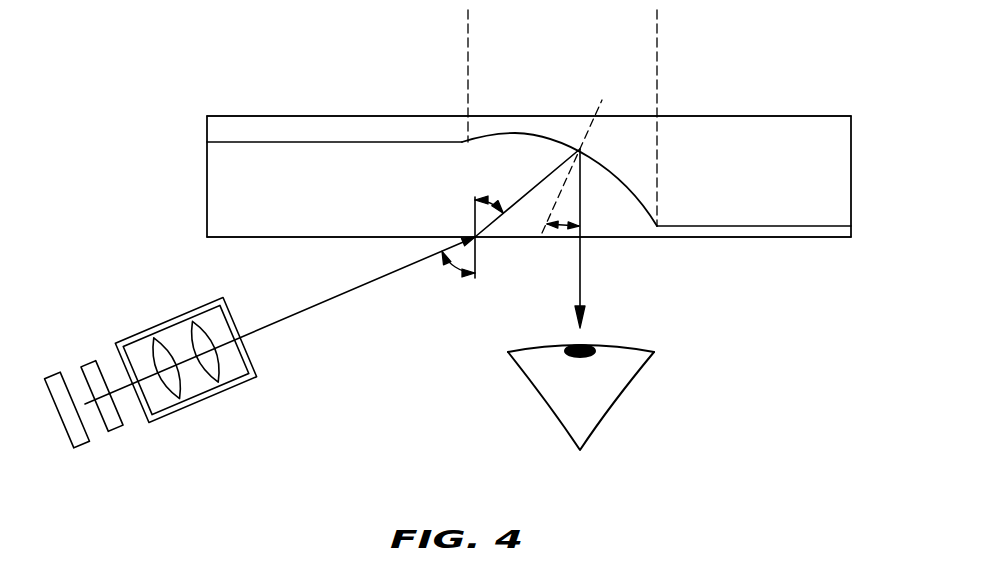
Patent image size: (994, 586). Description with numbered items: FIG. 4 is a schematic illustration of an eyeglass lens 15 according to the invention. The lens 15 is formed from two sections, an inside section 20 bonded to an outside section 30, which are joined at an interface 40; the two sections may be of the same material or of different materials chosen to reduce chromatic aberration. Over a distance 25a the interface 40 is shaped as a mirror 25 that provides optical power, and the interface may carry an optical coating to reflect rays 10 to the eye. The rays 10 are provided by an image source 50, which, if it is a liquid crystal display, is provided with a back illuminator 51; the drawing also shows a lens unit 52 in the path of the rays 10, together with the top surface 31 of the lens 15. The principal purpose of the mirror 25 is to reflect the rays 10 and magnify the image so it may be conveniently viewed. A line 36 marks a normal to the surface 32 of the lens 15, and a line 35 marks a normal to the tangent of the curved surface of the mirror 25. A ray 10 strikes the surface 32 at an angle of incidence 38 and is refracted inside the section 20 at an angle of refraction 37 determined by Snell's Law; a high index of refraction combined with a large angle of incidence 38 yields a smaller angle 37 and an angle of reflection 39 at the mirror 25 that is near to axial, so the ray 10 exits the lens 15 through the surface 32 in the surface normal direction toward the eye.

The rays 10 is at (330, 295).
The eyeglass lens 15 is at (730, 118).
The inside section 20 is at (222, 207).
The mirror 25 is at (516, 135).
The distance 25a is at (657, 28).
The outside section 30 is at (830, 143).
The top surface 31 is at (272, 115).
The surface 32 is at (770, 240).
The normal to the tangent of the curved surface of mirror 35 is at (597, 117).
The normal to the surface 36 is at (483, 250).
The angle of refraction 37 is at (488, 202).
The angle of incidence 38 is at (448, 268).
The angle of reflection 39 is at (557, 230).
The interface 40 is at (822, 226).
The image source 50 is at (86, 360).
The back illuminator 51 is at (55, 375).
The lens unit 52 is at (178, 333).